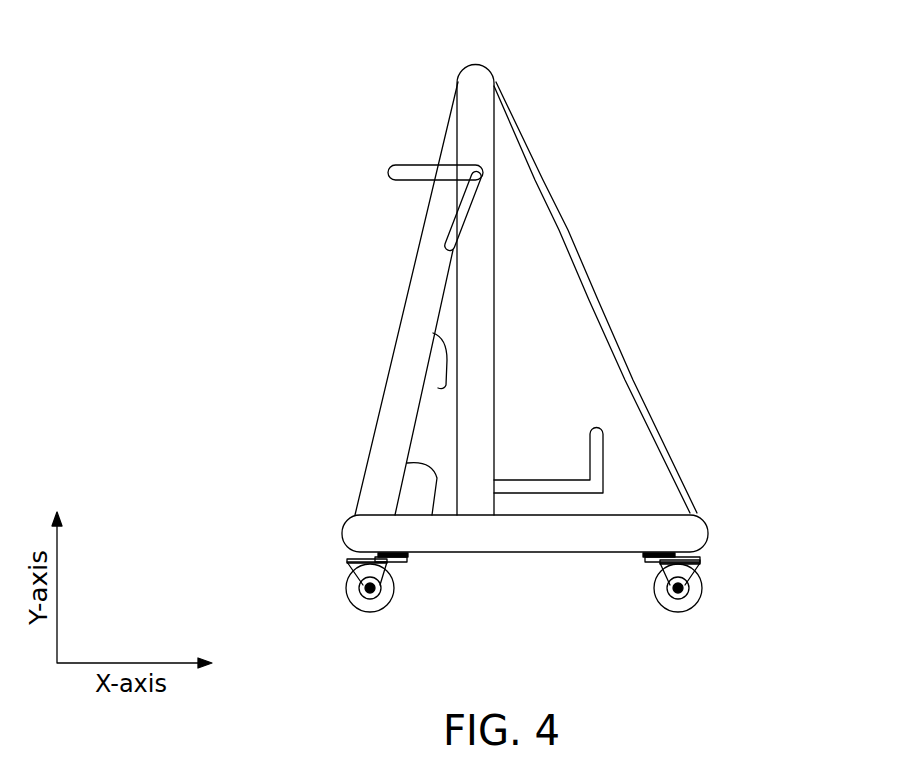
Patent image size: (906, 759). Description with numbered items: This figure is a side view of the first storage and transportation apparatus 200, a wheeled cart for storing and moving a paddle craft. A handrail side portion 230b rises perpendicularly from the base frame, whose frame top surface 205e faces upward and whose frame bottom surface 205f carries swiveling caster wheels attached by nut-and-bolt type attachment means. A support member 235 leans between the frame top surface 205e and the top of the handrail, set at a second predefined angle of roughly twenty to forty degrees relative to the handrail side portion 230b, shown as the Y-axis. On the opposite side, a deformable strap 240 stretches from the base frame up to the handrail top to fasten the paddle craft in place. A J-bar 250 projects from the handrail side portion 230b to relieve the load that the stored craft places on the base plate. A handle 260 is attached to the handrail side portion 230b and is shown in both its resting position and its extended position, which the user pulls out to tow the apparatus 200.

The first storage and transportation apparatus 200 is at (250, 53).
The handrail side portion 230b is at (477, 133).
The deformable strap 240 is at (596, 300).
The support member 235 is at (423, 282).
The handle 260 is at (445, 232).
The frame top surface 205e is at (407, 463).
The J-bar 250 is at (543, 480).
The frame bottom surface 205f is at (524, 553).